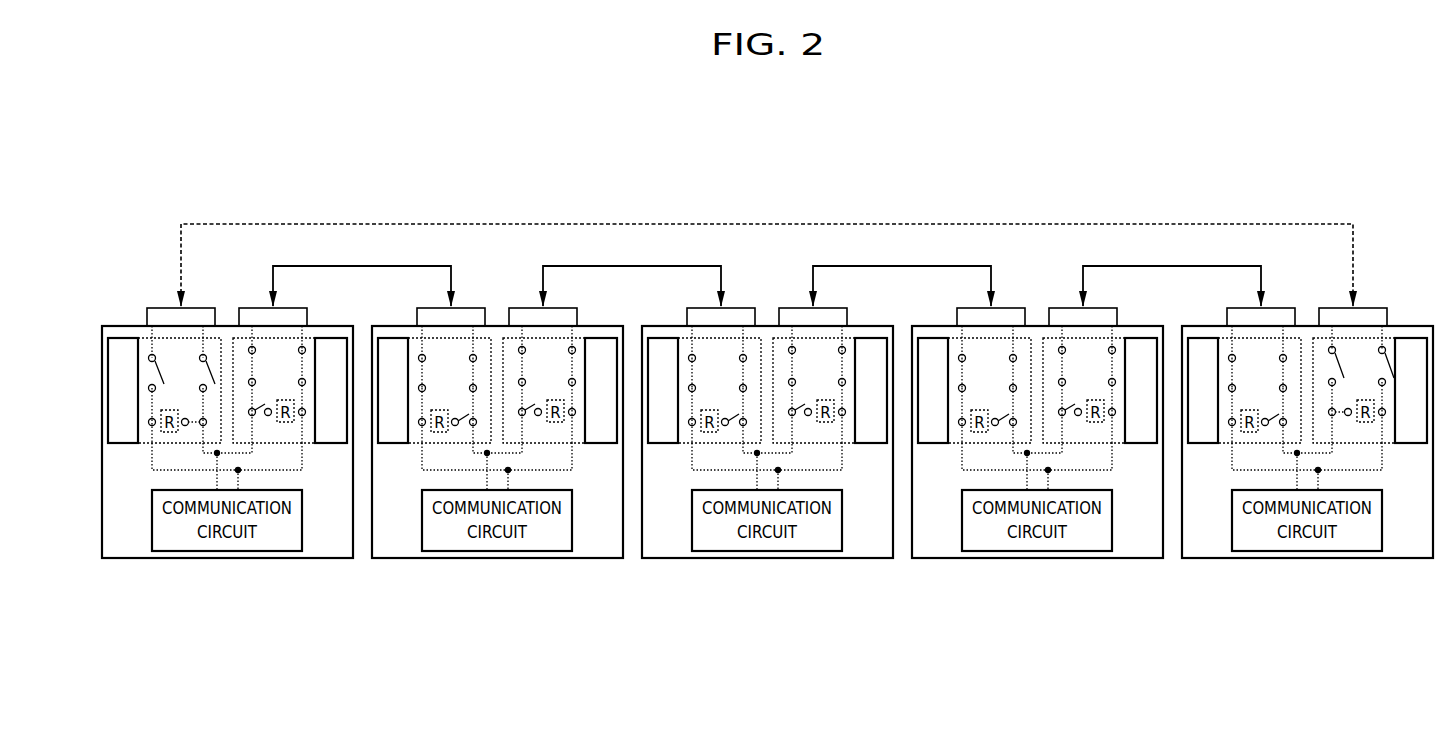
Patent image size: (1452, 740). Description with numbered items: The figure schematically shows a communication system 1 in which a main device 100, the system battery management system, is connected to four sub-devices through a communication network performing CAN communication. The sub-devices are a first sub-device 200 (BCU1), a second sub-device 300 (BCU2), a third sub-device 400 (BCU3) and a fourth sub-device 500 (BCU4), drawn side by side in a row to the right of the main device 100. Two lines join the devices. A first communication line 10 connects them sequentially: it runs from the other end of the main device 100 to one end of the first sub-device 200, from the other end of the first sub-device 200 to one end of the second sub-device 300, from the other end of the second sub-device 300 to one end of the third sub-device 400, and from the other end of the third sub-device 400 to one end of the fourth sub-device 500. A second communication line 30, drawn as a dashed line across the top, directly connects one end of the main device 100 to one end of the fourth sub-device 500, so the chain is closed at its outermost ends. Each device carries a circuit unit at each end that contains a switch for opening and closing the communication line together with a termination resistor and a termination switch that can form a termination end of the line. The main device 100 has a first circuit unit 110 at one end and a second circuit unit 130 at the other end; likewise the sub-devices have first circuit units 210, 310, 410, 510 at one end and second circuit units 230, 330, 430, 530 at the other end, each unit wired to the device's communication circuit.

The communication system 1 is at (1120, 163).
The first communication line 10 is at (633, 265).
The second communication line 30 is at (772, 223).
The main device 100 is at (227, 487).
The first circuit unit 110 is at (142, 445).
The second circuit unit 130 is at (313, 445).
The first sub-device 200 is at (497, 487).
The first circuit unit 210 is at (434, 481).
The second circuit unit 230 is at (560, 481).
The second sub-device 300 is at (767, 487).
The first circuit unit 310 is at (704, 481).
The second circuit unit 330 is at (830, 481).
The third sub-device 400 is at (1037, 487).
The first circuit unit 410 is at (974, 481).
The second circuit unit 430 is at (1100, 481).
The fourth sub-device 500 is at (1307, 487).
The first circuit unit 510 is at (1244, 481).
The second circuit unit 530 is at (1370, 481).